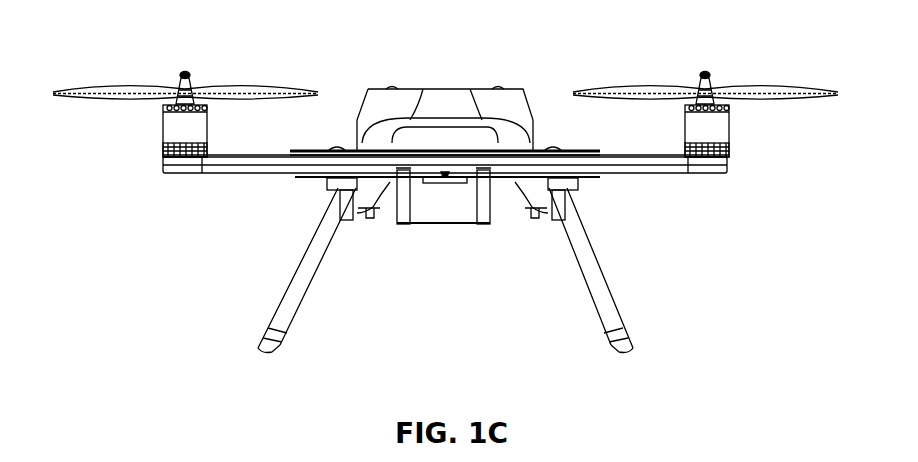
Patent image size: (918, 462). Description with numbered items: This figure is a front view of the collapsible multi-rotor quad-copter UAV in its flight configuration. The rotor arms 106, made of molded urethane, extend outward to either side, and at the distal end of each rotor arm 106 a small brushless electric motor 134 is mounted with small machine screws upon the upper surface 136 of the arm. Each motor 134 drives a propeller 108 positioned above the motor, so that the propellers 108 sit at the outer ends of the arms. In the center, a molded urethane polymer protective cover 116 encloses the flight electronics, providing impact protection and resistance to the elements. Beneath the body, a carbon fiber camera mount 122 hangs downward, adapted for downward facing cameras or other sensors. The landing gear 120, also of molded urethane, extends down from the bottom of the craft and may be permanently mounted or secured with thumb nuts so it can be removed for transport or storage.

The rotor arm 106 is at (643, 173).
The propeller 108 is at (131, 91).
The protective cover 116 is at (378, 88).
The landing gear 120 is at (302, 312).
The camera mount 122 is at (462, 226).
The brushless electric motor 134 is at (176, 128).
The upper surface 136 is at (261, 156).